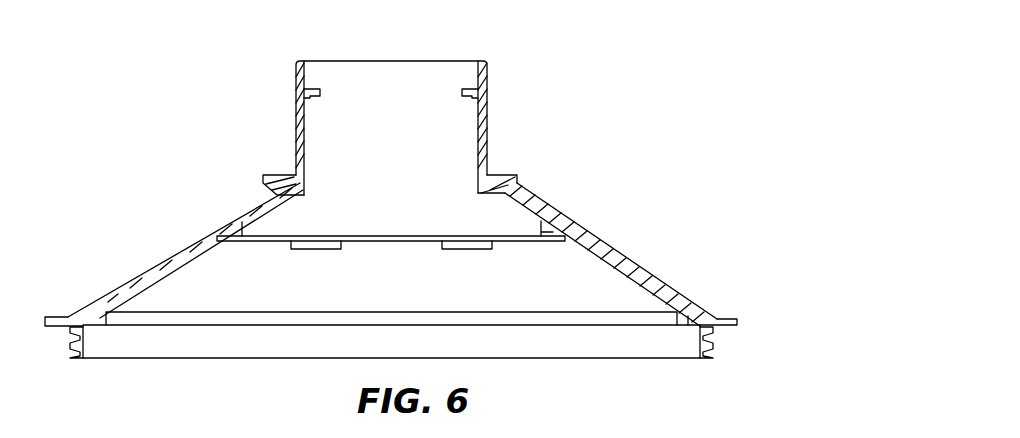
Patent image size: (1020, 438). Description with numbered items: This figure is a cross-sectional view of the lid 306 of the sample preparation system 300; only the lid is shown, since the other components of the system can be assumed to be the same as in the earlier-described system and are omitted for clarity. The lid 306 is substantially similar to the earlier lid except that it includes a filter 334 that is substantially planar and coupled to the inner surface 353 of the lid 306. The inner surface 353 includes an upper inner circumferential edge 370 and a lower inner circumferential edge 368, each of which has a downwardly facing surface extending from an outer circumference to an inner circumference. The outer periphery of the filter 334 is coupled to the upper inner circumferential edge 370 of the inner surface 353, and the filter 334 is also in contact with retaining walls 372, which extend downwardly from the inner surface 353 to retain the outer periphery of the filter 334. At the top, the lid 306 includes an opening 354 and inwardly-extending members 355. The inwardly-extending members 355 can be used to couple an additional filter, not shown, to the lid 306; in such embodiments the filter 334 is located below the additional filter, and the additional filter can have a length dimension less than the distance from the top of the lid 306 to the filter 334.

The sample preparation system 300 is at (637, 78).
The lid 306 is at (590, 162).
The opening 354 is at (423, 61).
The inwardly-extending members 355 is at (305, 93).
The filter 334 is at (268, 236).
The upper inner circumferential edge 370 is at (557, 214).
The retaining walls 372 is at (307, 250).
The inner surface 353 is at (147, 293).
The lower inner circumferential edge 368 is at (692, 308).